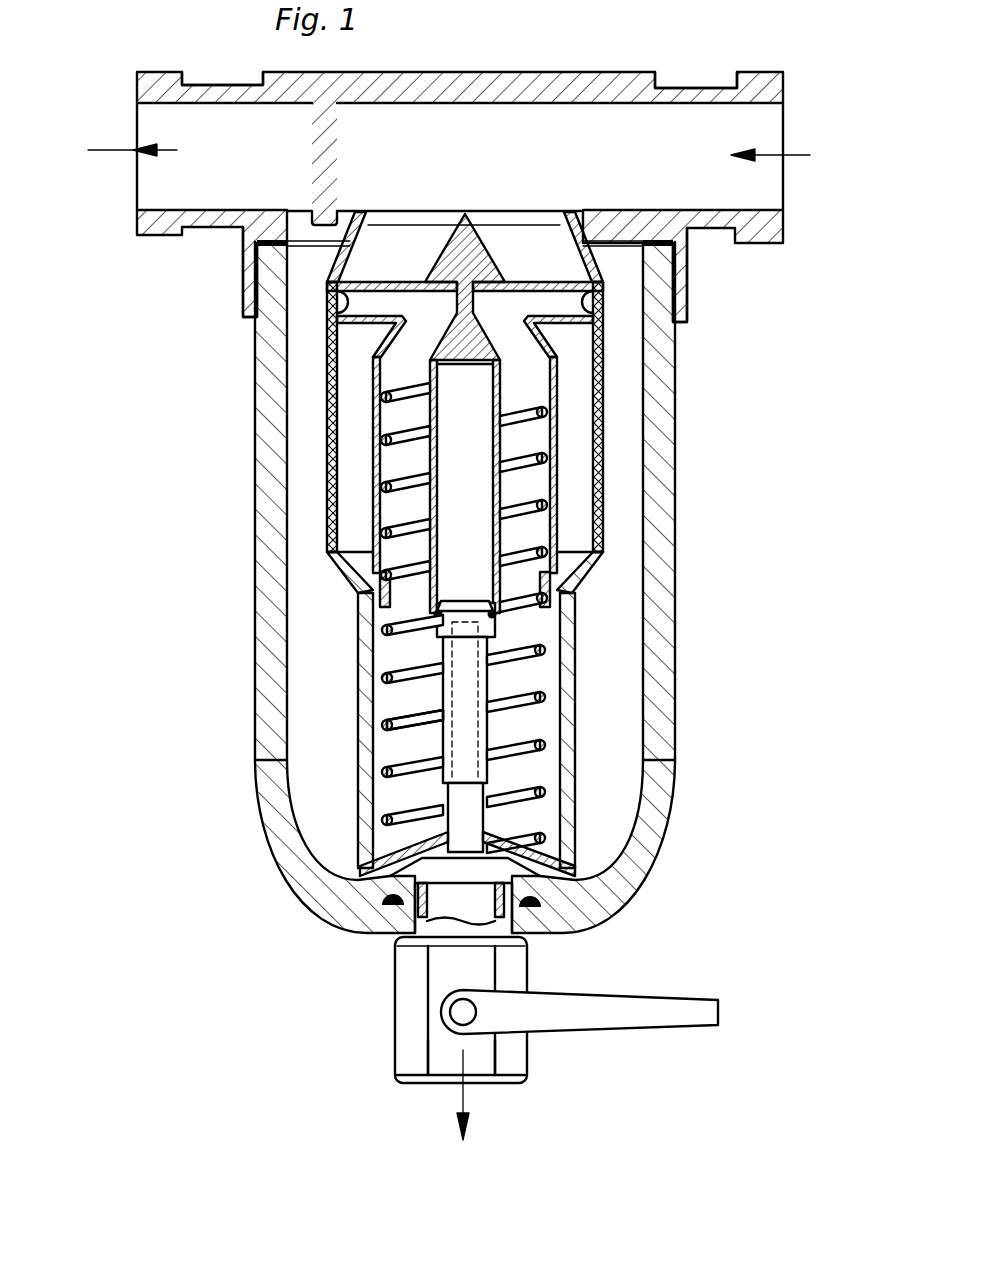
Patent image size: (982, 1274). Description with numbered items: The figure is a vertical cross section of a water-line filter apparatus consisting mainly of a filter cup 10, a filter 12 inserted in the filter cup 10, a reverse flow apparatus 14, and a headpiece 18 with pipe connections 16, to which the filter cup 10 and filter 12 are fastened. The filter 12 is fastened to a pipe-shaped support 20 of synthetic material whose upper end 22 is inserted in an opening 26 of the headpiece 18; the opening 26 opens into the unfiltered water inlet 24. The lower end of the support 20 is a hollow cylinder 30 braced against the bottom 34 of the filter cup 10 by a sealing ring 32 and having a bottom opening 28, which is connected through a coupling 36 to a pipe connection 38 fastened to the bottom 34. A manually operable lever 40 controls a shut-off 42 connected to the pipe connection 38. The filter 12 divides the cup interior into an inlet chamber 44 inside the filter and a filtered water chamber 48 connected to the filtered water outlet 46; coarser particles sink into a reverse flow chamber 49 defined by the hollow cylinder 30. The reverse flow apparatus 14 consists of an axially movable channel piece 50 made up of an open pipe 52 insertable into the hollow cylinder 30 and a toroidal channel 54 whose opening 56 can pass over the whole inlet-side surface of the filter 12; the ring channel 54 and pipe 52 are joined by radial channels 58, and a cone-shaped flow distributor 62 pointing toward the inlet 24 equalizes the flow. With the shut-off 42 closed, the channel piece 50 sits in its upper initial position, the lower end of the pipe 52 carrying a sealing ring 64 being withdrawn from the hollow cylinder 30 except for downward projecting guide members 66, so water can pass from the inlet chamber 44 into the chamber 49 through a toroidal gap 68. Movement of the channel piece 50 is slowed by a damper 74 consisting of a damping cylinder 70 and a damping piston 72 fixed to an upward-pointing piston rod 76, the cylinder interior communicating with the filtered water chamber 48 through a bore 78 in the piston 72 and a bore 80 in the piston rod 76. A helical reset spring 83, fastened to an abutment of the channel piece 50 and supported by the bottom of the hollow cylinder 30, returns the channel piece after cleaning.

The filter cup 10 is at (660, 400).
The filter 12 is at (600, 505).
The reverse flow apparatus 14 is at (568, 438).
The pipe connections 16 is at (152, 72).
The headpiece 18 is at (503, 59).
The pipe-shaped support 20 is at (659, 447).
The upper end of support 22 is at (568, 214).
The unfiltered water inlet 24 is at (770, 211).
The opening 26 is at (360, 216).
The bottom opening 28 is at (487, 945).
The hollow cylinder 30 is at (566, 812).
The sealing ring 32 is at (392, 908).
The bottom of filter cup 34 is at (585, 882).
The coupling 36 is at (412, 946).
The pipe connection 38 is at (486, 1086).
The manually operable lever 40 is at (656, 1000).
The shut-off 42 is at (433, 1043).
The inlet chamber 44 is at (660, 344).
The filtered water outlet 46 is at (160, 211).
The filtered water chamber 48 is at (278, 346).
The reverse flow chamber 49 is at (562, 722).
The channel piece 50 is at (368, 450).
The open pipe 52 is at (372, 506).
The toroidal channel 54 is at (365, 283).
The opening of ring channel 56 is at (340, 302).
The radial channels 58 is at (382, 322).
The cone-shaped flow distributor 62 is at (468, 222).
The sealing ring 64 is at (330, 566).
The guide members 66 is at (376, 602).
The toroidal gap 68 is at (503, 615).
The damping cylinder 70 is at (383, 398).
The damping piston 72 is at (437, 627).
The damper 74 is at (556, 556).
The piston rod 76 is at (488, 768).
The bore in piston 78 is at (465, 600).
The bore in piston rod 80 is at (425, 812).
The helical spring 83 is at (410, 720).